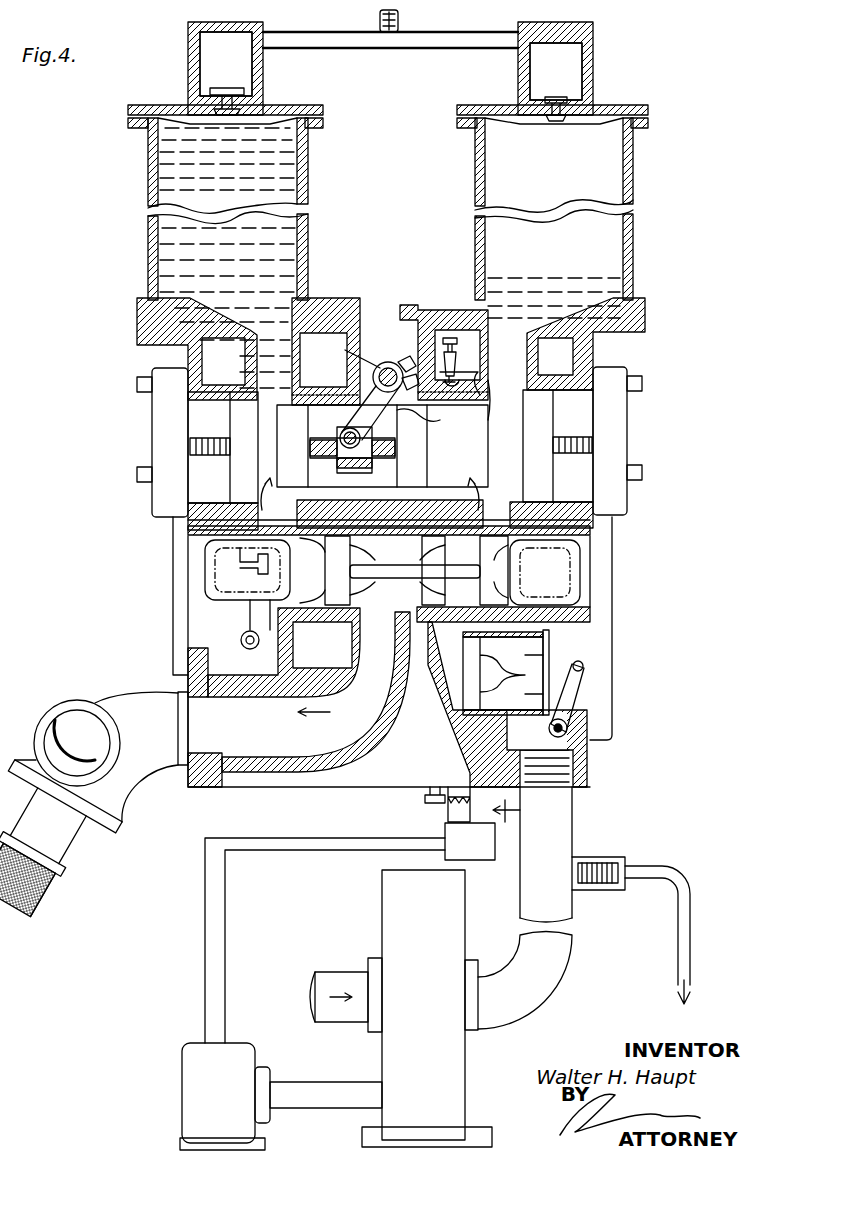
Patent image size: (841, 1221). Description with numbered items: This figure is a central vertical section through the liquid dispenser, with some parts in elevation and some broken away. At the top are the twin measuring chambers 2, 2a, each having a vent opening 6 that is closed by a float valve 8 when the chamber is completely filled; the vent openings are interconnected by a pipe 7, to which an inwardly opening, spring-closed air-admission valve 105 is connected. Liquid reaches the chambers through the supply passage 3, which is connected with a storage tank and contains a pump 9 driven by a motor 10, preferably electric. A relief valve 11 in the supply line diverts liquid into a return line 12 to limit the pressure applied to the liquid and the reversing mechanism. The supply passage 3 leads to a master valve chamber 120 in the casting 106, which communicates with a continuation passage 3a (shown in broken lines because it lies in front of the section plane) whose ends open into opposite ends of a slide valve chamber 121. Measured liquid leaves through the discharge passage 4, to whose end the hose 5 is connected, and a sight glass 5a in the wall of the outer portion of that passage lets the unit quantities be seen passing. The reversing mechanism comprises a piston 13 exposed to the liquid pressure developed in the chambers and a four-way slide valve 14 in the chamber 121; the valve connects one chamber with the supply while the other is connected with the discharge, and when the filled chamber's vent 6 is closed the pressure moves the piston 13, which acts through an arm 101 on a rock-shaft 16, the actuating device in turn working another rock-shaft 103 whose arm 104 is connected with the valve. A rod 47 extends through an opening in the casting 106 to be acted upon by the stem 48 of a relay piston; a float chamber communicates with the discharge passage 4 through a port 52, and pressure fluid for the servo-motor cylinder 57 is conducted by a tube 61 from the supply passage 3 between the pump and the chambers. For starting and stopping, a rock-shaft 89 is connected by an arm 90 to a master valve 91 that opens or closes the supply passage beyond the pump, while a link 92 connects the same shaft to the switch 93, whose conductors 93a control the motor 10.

The measuring chamber 2 is at (146, 192).
The measuring chamber 2a is at (633, 182).
The supply passage 3 is at (314, 620).
The continuation passage 3a is at (256, 554).
The discharge passage 4 is at (299, 699).
The hose 5 is at (45, 888).
The sight glass 5a is at (76, 720).
The vent opening 6 is at (256, 100).
The pipe 7 is at (350, 50).
The float valve 8 is at (198, 86).
The pump 9 is at (390, 902).
The motor 10 is at (240, 1046).
The relief valve 11 is at (608, 858).
The return line 12 is at (690, 912).
The piston 13 is at (430, 454).
The four-way slide valve 14 is at (522, 574).
The rock-shaft 16 is at (365, 354).
The rod 47 is at (432, 312).
The stem 48 is at (468, 372).
The port 52 is at (386, 608).
The cylinder 57 is at (490, 410).
The tube 61 is at (507, 831).
The rock-shaft 89 is at (568, 730).
The arm 90 is at (580, 696).
The master valve 91 is at (550, 648).
The link 92 is at (460, 790).
The switch 93 is at (470, 841).
The conductors 93a is at (252, 850).
The arm 101 is at (428, 420).
The rock-shaft 103 is at (252, 649).
The arm 104 is at (208, 630).
The air-admission valve 105 is at (399, 18).
The casting 106 is at (343, 316).
The master valve chamber 120 is at (600, 612).
The slide valve chamber 121 is at (600, 550).